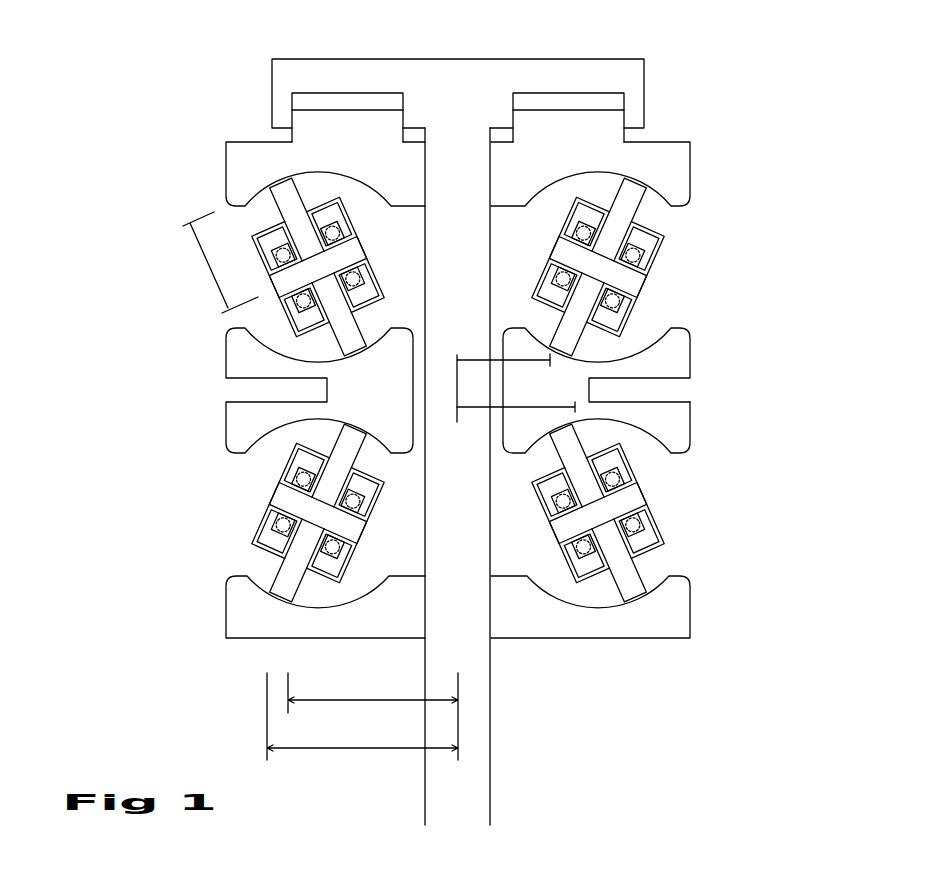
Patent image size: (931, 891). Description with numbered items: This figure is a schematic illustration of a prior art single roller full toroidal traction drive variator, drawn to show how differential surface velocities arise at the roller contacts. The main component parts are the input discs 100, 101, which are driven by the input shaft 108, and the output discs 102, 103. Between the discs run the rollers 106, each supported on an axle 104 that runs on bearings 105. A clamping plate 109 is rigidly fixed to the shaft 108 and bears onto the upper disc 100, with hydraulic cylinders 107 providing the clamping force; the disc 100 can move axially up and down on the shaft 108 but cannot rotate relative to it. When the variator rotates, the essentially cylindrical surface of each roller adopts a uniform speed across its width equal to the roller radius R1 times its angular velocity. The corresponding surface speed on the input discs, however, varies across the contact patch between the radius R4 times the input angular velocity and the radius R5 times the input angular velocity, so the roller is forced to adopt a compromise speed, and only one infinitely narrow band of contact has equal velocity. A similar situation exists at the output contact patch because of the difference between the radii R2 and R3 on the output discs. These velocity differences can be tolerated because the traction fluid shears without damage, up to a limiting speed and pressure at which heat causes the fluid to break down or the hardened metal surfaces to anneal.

The input disc 100 is at (452, 365).
The input disc 101 is at (225, 607).
The output disc 102 is at (682, 453).
The output disc 103 is at (685, 328).
The axle 104 is at (650, 288).
The bearing 105 is at (665, 240).
The roller 106 is at (650, 193).
The hydraulic cylinder 107 is at (587, 102).
The input shaft 108 is at (490, 673).
The clamping plate 109 is at (460, 59).
The roller radius R1 is at (213, 272).
The output contact radius R2 is at (480, 360).
The output contact radius R3 is at (482, 407).
The input contact radius R4 is at (375, 700).
The input contact radius R5 is at (358, 748).